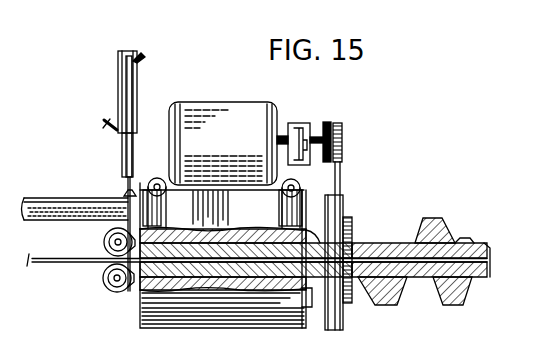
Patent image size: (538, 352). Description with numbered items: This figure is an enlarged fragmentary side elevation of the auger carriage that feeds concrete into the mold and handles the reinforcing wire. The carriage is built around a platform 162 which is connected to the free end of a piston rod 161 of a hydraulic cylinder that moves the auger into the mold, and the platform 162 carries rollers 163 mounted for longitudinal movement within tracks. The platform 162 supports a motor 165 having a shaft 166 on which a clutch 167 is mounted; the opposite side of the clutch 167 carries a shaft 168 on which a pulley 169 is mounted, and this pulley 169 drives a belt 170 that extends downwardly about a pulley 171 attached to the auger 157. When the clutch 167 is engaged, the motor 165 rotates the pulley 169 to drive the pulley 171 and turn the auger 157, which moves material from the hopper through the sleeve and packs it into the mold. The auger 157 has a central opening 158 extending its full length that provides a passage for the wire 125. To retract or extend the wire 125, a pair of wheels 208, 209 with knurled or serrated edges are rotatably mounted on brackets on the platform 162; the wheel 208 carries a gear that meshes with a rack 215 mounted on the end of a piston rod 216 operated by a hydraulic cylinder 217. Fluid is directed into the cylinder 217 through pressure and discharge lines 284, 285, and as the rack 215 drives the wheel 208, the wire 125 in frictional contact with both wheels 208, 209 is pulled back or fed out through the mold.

The wire 125 is at (50, 263).
The auger 157 is at (420, 228).
The central opening 158 is at (468, 244).
The piston rod 161 is at (42, 198).
The platform 162 is at (160, 315).
The rollers 163 is at (163, 180).
The motor 165 is at (210, 102).
The shaft 166 is at (276, 137).
The clutch 167 is at (297, 122).
The shaft 168 is at (328, 123).
The pulley 169 is at (344, 138).
The belt 170 is at (342, 180).
The pulley 171 is at (345, 322).
The wheel 208 is at (105, 240).
The wheel 209 is at (118, 291).
The rack 215 is at (127, 196).
The piston rod 216 is at (127, 160).
The hydraulic cylinder 217 is at (122, 89).
The pressure line 284 is at (105, 121).
The discharge line 285 is at (160, 31).